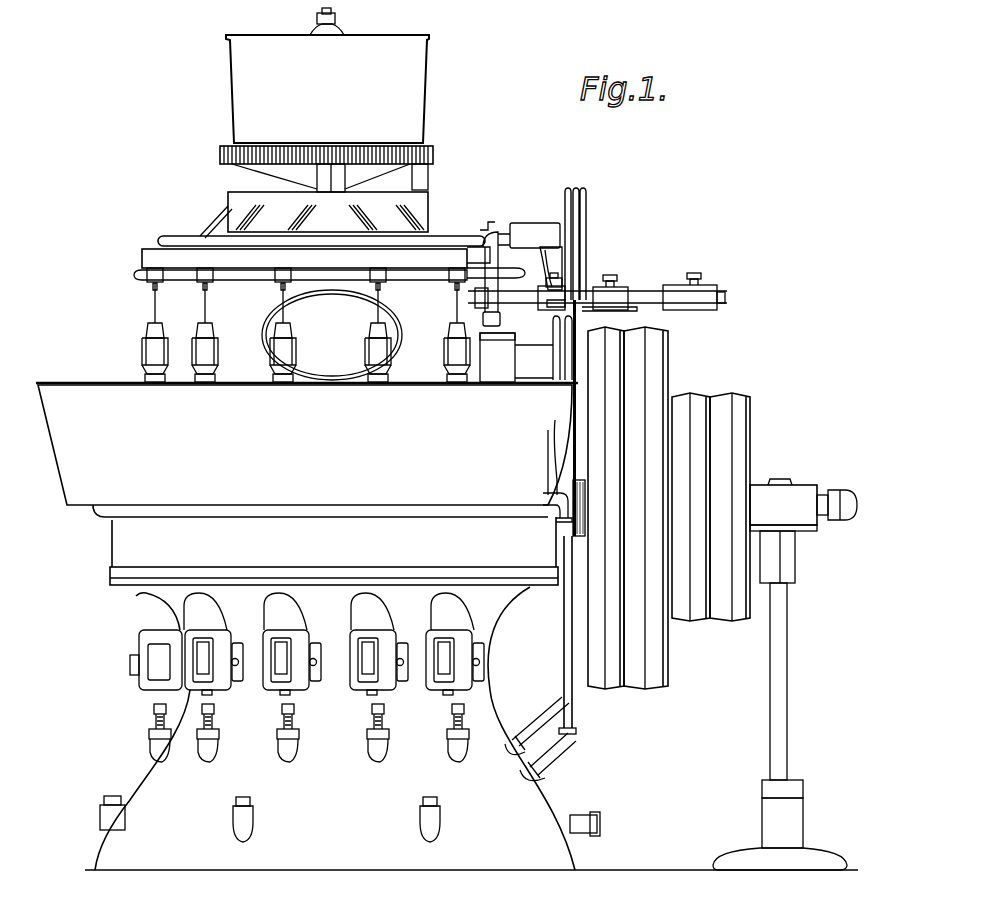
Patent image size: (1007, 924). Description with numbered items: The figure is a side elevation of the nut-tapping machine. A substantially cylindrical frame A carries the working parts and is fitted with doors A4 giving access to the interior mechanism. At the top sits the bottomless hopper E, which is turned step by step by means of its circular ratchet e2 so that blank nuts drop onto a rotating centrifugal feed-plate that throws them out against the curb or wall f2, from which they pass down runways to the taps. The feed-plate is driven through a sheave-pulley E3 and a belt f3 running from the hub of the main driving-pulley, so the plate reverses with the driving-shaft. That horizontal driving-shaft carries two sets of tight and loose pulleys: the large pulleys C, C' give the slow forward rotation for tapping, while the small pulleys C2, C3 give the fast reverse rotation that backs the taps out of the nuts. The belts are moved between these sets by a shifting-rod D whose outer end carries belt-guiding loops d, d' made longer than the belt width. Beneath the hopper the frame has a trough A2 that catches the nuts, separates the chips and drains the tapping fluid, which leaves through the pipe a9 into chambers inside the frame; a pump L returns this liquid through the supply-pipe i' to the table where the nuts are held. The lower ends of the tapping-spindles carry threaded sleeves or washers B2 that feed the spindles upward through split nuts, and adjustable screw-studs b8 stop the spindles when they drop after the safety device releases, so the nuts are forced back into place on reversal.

The hopper E is at (340, 75).
The circular ratchet e2 is at (434, 153).
The curb or wall f2 is at (428, 200).
The supply-pipe i' is at (321, 224).
The belt f3 is at (500, 233).
The sheave-pulley E3 is at (586, 196).
The belt-guiding loop d is at (597, 279).
The belt-guiding loop d' is at (704, 279).
The shifting-rod D is at (725, 298).
The pump L is at (537, 352).
The doors A4 is at (332, 335).
The trough A2 is at (125, 444).
The frame A is at (192, 799).
The threaded sleeves or washers B2 is at (293, 692).
The adjustable screw-studs b8 is at (218, 722).
The pipe a9 is at (555, 760).
The large pulley C is at (606, 524).
The large pulley C' is at (646, 523).
The small pulley C2 is at (697, 620).
The small pulley C3 is at (740, 620).